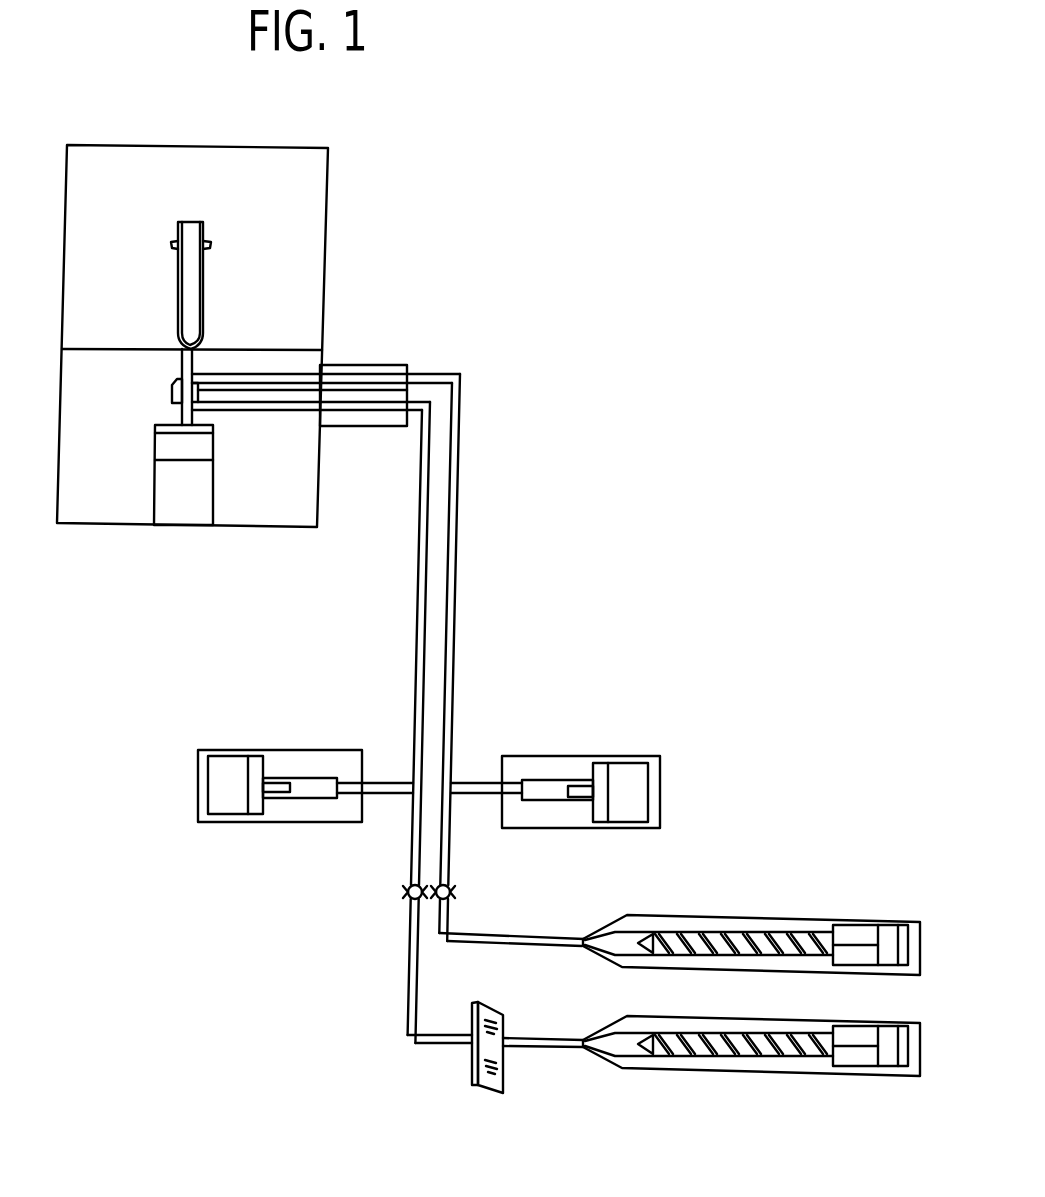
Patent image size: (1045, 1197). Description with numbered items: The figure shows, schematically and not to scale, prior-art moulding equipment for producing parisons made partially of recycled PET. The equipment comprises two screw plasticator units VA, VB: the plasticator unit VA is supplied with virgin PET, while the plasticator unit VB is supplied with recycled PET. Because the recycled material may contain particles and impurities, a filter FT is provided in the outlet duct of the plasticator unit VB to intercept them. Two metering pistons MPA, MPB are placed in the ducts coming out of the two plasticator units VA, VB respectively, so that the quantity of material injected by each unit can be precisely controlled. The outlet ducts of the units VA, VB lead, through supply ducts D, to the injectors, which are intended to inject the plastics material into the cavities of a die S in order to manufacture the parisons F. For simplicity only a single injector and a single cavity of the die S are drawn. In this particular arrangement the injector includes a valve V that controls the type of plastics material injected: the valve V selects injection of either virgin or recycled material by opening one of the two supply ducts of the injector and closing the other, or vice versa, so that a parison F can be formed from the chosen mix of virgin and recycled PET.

The die S is at (328, 202).
The parison F is at (178, 273).
The supply duct D is at (365, 373).
The valve V is at (183, 450).
The metering piston MPA is at (558, 755).
The metering piston MPB is at (282, 822).
The screw plasticator unit VA is at (762, 915).
The screw plasticator unit VB is at (743, 1073).
The filter FT is at (473, 1085).